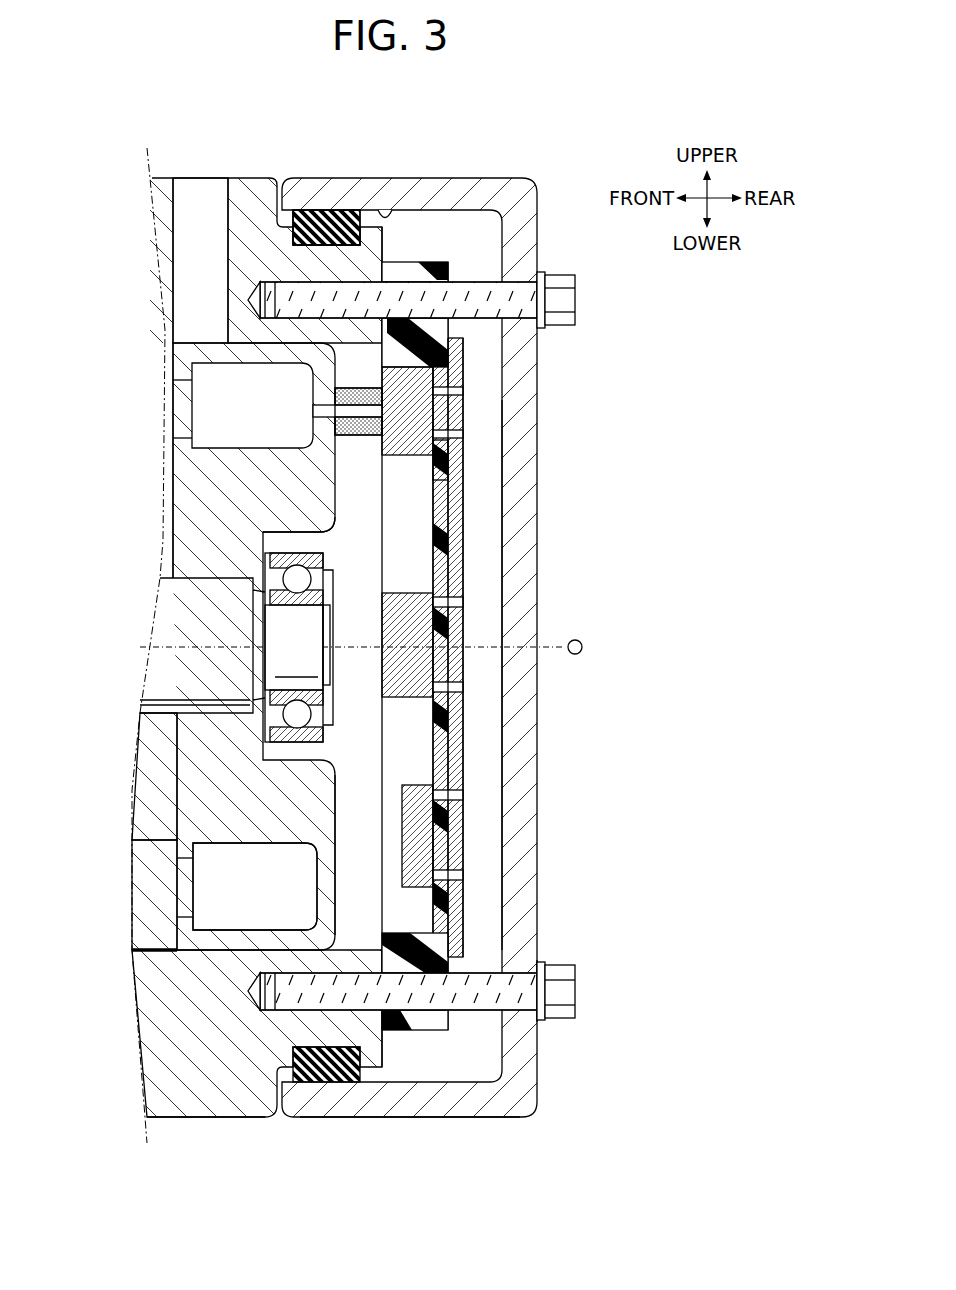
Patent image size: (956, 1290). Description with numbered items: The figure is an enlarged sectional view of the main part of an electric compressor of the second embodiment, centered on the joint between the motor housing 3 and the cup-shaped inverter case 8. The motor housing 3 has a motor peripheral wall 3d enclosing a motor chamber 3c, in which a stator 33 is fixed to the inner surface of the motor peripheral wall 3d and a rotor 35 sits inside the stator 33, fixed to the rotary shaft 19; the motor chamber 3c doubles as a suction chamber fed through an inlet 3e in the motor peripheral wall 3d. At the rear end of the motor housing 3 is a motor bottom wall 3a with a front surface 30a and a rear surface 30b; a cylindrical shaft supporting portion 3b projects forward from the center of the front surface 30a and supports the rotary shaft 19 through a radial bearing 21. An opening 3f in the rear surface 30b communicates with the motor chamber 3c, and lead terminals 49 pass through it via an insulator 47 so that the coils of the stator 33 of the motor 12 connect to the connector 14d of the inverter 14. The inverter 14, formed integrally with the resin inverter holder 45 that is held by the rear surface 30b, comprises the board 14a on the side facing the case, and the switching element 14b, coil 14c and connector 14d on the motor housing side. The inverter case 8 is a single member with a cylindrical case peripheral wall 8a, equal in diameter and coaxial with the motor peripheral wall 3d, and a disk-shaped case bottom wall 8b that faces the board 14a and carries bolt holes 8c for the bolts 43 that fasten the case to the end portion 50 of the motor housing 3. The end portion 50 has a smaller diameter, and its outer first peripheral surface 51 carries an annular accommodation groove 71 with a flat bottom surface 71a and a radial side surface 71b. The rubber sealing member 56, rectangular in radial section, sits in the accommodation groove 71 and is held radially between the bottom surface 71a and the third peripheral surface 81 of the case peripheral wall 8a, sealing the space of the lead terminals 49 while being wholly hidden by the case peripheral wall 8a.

The motor housing 3 is at (152, 1072).
The motor bottom wall 3a is at (346, 800).
The shaft supporting portion 3b is at (276, 541).
The motor chamber 3c is at (215, 787).
The motor peripheral wall 3d is at (160, 1118).
The inlet 3e is at (175, 207).
The opening 3f is at (340, 395).
The inverter case 8 is at (540, 178).
The case peripheral wall 8a is at (432, 1108).
The case bottom wall 8b is at (525, 912).
The bolt holes 8c is at (522, 990).
The motor 12 is at (147, 957).
The inverter 14 is at (468, 752).
The board 14a is at (455, 575).
The switching element 14b is at (420, 820).
The coil 14c is at (420, 660).
The connector 14d is at (393, 395).
The rotary shaft 19 is at (160, 631).
The radial bearing 21 is at (290, 715).
The front surface 30a is at (330, 512).
The rear surface 30b is at (460, 517).
The stator 33 is at (140, 897).
The rotor 35 is at (140, 788).
The bolts 43 is at (565, 990).
The inverter holder 45 is at (430, 478).
The insulator 47 is at (338, 432).
The lead terminals 49 is at (345, 410).
The end portion 50 is at (372, 1070).
The first peripheral surface 51 is at (292, 208).
The sealing member 56 is at (325, 210).
The accommodation groove 71 is at (366, 242).
The bottom surface 71a is at (326, 248).
The side surface 71b is at (295, 237).
The third peripheral surface 81 is at (386, 208).